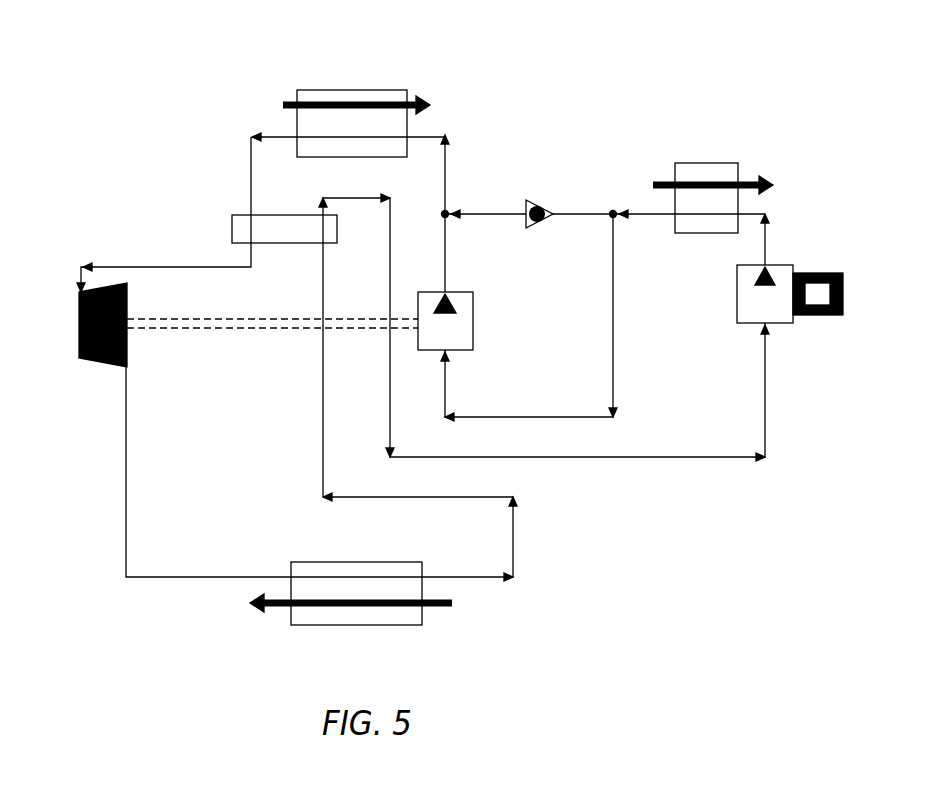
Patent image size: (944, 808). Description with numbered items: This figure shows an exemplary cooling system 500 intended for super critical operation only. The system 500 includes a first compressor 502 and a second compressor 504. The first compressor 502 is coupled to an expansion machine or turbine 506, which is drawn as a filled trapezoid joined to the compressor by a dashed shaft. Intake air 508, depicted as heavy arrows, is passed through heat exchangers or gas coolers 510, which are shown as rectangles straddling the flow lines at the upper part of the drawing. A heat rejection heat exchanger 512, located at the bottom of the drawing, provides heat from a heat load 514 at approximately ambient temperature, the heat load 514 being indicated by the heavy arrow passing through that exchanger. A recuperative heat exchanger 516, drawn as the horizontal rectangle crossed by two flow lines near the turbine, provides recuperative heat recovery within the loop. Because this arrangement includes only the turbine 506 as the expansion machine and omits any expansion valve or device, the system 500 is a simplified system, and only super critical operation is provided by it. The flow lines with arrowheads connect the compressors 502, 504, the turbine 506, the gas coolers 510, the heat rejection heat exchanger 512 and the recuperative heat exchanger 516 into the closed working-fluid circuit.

The system 500 is at (720, 58).
The first compressor 502 is at (478, 325).
The second compressor 504 is at (782, 262).
The turbine 506 is at (70, 318).
The intake air 508 is at (291, 92).
The heat exchangers 510 is at (378, 88).
The heat rejection heat exchanger 512 is at (350, 630).
The heat load 514 is at (443, 610).
The recuperative heat exchanger 516 is at (240, 212).